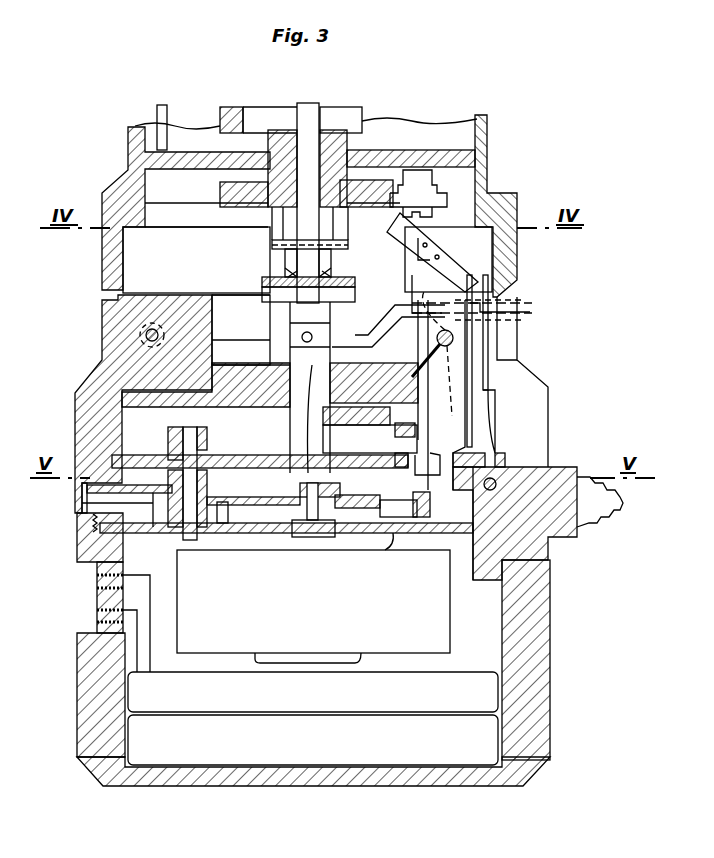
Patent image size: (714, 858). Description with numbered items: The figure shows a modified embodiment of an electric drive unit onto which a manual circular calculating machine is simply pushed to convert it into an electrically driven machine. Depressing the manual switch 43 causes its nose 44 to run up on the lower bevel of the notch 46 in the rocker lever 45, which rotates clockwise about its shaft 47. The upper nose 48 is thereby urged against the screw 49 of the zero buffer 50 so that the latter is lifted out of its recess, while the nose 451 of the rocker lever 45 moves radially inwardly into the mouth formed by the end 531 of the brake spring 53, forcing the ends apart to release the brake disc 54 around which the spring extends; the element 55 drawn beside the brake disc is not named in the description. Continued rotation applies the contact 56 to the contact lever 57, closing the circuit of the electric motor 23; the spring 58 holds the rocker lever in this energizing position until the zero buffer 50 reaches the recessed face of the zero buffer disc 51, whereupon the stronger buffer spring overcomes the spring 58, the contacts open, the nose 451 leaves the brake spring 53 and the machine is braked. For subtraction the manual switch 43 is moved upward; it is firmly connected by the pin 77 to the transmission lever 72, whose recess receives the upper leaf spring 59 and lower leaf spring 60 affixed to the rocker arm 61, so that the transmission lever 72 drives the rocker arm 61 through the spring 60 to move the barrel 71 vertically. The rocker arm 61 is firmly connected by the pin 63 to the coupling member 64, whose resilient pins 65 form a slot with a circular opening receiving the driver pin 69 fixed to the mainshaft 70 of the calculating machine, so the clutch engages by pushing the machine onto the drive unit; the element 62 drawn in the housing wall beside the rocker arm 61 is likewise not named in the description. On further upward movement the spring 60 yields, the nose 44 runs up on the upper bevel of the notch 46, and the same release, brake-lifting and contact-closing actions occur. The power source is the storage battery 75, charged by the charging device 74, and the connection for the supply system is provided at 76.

The electric motor 23 is at (448, 612).
The manual switch 43 is at (600, 513).
The nose 44 is at (488, 462).
The rocker lever 45 is at (496, 420).
The notch 46 is at (458, 472).
The shaft 47 is at (455, 338).
The upper nose 48 is at (397, 214).
The screw 49 is at (433, 212).
The zero buffer 50 is at (445, 196).
The zero buffer disc 51 is at (370, 185).
The brake spring 53 is at (217, 503).
The brake disc 54 is at (345, 510).
The support 55 is at (313, 512).
The contact 56 is at (420, 262).
The contact lever 57 is at (520, 313).
The spring 58 is at (460, 367).
The upper leaf spring 59 is at (487, 280).
The lower leaf spring 60 is at (490, 328).
The rocker arm 61 is at (233, 330).
The pin 62 is at (146, 336).
The pin 63 is at (302, 337).
The coupling member 64 is at (345, 287).
The resilient pins 65 is at (297, 265).
The driver pin 69 is at (272, 244).
The mainshaft 70 is at (313, 108).
The barrel 71 is at (253, 117).
The transmission lever 72 is at (480, 383).
The charging device 74 is at (488, 680).
The storage battery 75 is at (488, 735).
The supply system connection 76 is at (107, 585).
The pin 77 is at (513, 470).
The nose 451 is at (425, 512).
The end of brake spring 531 is at (388, 513).